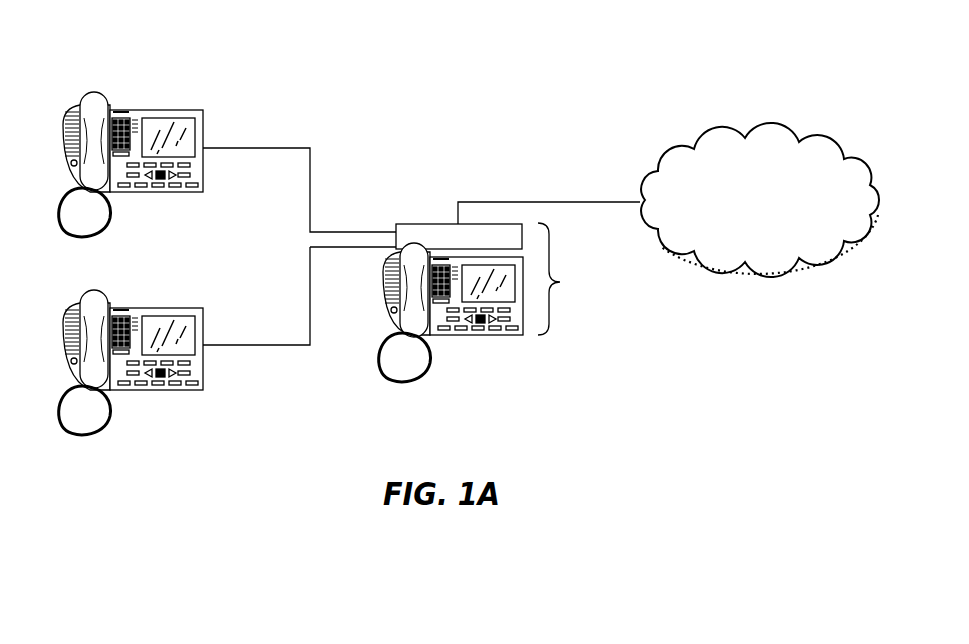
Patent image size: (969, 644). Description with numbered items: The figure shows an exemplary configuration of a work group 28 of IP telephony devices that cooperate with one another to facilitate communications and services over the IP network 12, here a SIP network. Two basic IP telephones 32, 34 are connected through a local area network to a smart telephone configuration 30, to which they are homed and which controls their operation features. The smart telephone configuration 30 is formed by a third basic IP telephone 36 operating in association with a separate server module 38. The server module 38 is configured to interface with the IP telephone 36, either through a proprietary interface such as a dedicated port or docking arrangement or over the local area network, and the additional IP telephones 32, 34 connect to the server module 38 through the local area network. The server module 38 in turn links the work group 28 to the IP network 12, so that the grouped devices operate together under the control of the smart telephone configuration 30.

The IP network 12 is at (750, 244).
The work group 28 is at (481, 80).
The smart telephone configuration 30 is at (487, 286).
The IP telephone 32 is at (150, 193).
The IP telephone 34 is at (150, 390).
The IP telephone 36 is at (472, 335).
The server module 38 is at (433, 224).